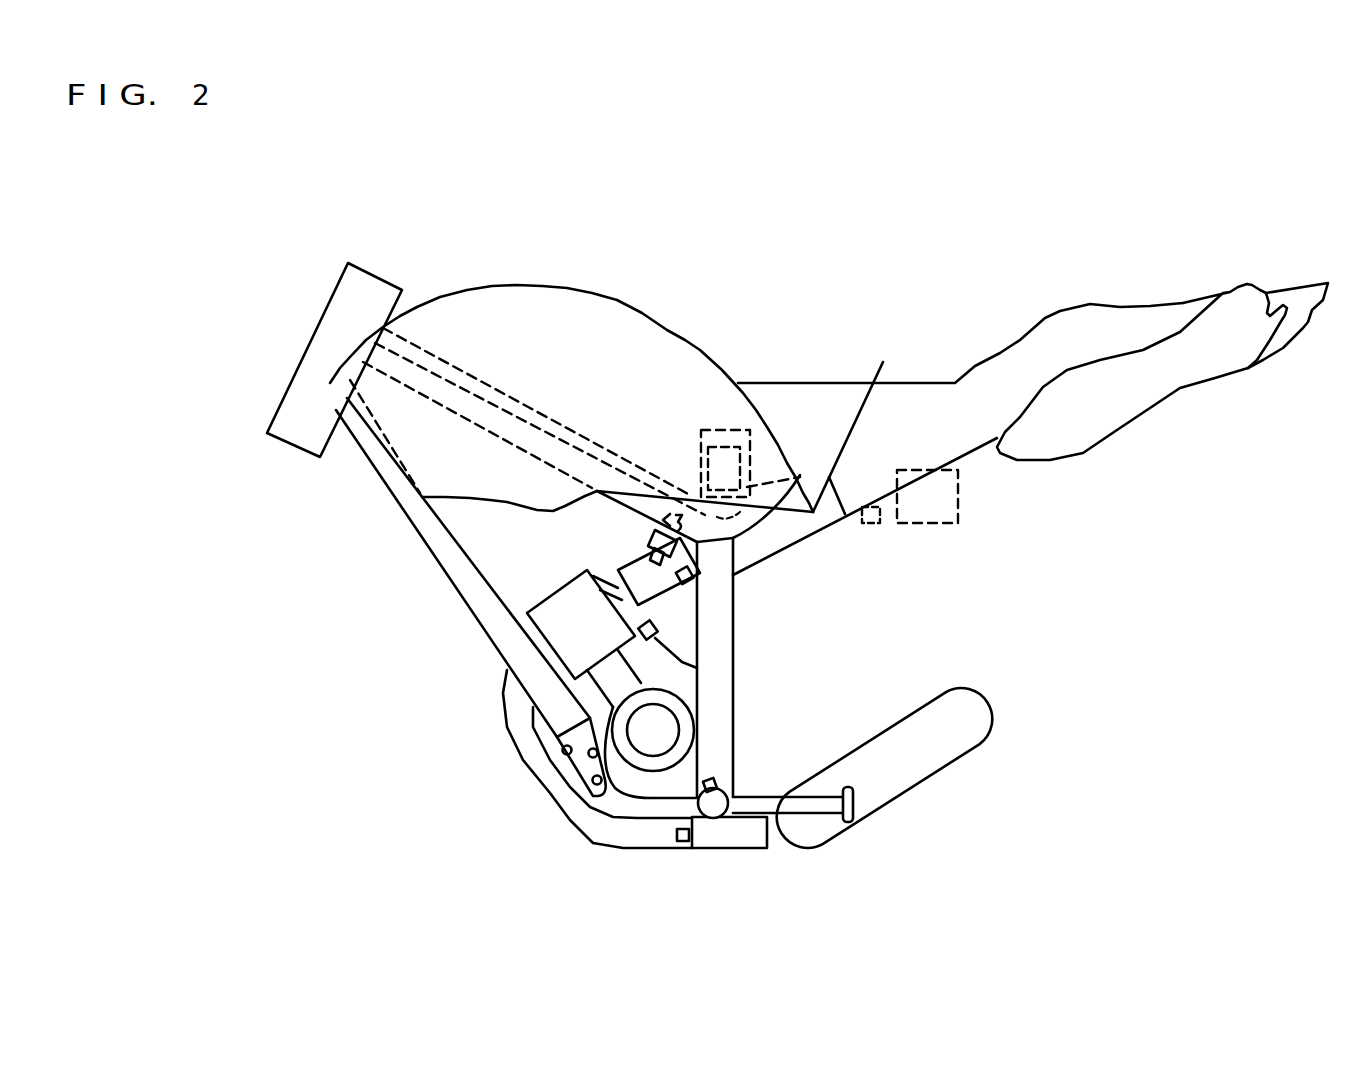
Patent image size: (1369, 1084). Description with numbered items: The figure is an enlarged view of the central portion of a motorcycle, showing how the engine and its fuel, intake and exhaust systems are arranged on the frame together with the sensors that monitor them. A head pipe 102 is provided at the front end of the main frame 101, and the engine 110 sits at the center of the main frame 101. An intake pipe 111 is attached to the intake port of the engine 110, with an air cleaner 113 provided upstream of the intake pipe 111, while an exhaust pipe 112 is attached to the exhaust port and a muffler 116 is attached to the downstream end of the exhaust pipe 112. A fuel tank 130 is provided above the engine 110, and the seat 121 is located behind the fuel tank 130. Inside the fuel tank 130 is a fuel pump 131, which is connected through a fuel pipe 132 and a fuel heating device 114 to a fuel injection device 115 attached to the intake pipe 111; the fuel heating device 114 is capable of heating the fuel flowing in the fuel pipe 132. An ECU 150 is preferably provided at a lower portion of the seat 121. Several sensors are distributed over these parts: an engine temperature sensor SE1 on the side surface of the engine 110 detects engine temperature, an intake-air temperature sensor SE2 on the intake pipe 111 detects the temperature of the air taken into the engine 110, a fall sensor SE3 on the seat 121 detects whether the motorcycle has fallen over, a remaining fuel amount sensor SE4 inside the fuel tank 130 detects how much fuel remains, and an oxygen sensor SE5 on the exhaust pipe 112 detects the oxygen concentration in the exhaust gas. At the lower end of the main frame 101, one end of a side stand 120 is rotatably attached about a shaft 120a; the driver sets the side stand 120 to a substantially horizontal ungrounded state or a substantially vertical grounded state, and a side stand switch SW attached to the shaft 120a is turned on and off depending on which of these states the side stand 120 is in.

The main frame 101 is at (400, 360).
The head pipe 102 is at (363, 342).
The engine 110 is at (573, 626).
The intake pipe 111 is at (618, 570).
The exhaust pipe 112 is at (545, 760).
The air cleaner 113 is at (800, 530).
The fuel heating device 114 is at (671, 522).
The fuel injection device 115 is at (960, 343).
The muffler 116 is at (920, 763).
The side stand 120 is at (780, 832).
The shaft 120a is at (713, 806).
The seat 121 is at (1177, 304).
The fuel tank 130 is at (657, 318).
The fuel pump 131 is at (713, 425).
The fuel pipe 132 is at (800, 475).
The ECU 150 is at (937, 507).
The engine temperature sensor SE1 is at (656, 638).
The intake-air temperature sensor SE2 is at (688, 582).
The fall sensor SE3 is at (873, 522).
The remaining fuel amount sensor SE4 is at (738, 440).
The oxygen sensor SE5 is at (683, 843).
The side stand switch SW is at (722, 790).